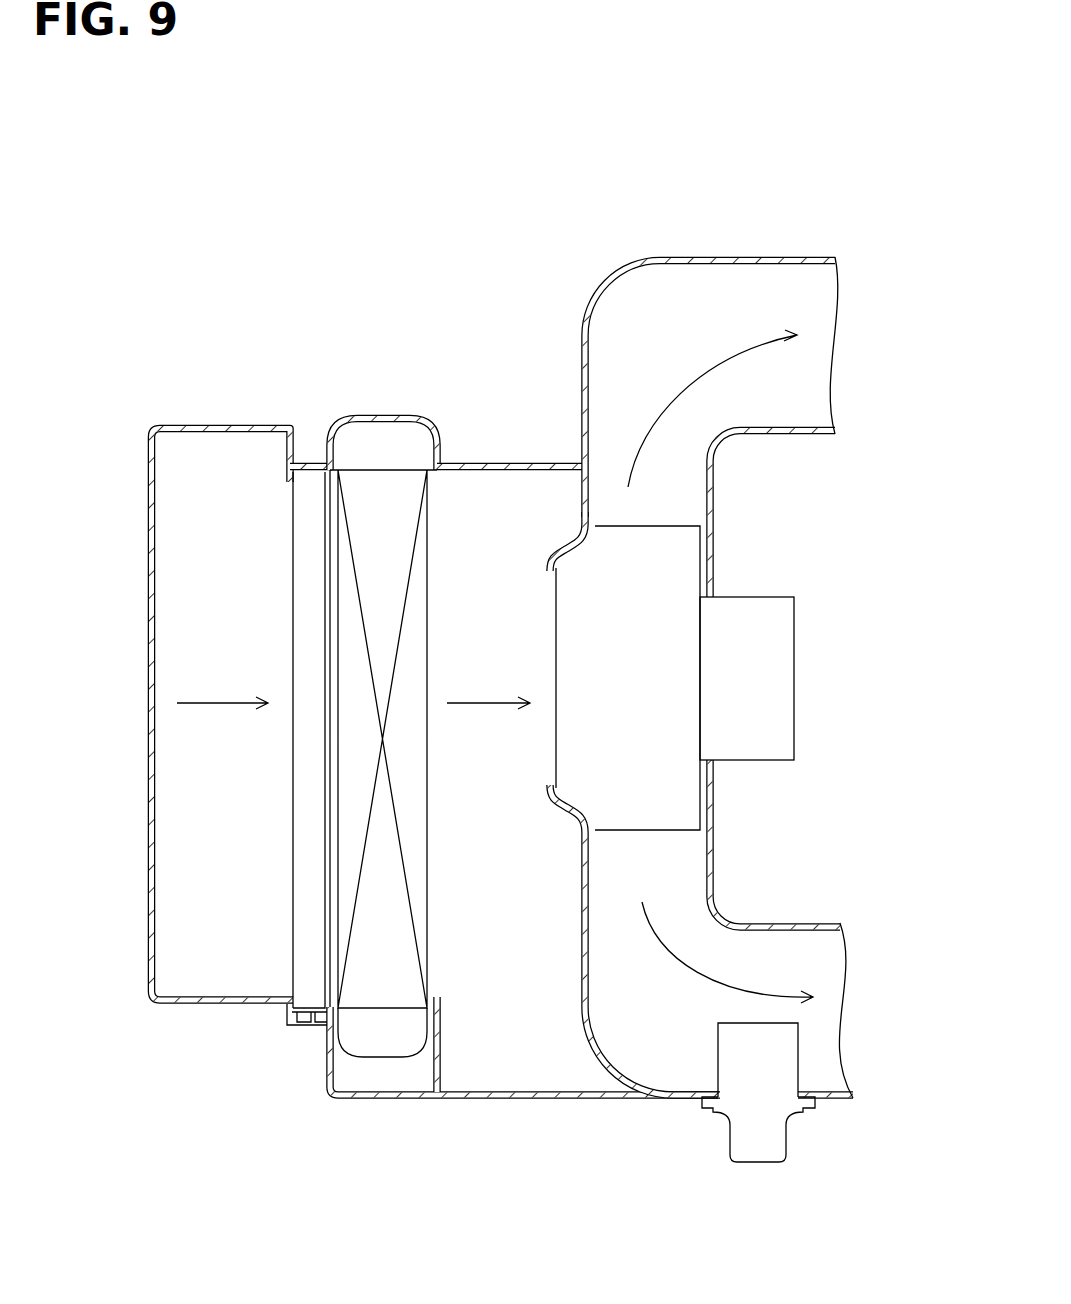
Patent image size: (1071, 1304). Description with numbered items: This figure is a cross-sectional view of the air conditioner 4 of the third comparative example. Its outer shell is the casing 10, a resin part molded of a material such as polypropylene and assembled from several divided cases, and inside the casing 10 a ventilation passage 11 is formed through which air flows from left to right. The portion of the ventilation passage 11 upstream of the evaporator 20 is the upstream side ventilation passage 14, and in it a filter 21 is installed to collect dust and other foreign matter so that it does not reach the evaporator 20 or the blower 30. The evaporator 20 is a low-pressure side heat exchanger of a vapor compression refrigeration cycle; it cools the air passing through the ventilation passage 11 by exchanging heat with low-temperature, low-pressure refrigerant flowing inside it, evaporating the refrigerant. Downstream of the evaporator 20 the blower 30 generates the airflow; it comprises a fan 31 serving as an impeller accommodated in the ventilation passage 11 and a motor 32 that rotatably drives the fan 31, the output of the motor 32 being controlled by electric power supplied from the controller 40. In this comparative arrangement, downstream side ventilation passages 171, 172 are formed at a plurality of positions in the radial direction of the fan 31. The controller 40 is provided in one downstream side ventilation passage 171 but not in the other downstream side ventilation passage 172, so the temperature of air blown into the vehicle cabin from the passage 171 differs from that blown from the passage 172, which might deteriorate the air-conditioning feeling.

The air conditioner 4 is at (495, 248).
The casing 10 is at (148, 580).
The ventilation passage 11 is at (697, 312).
The upstream side ventilation passage 14 is at (200, 777).
The evaporator 20 is at (378, 522).
The filter 21 is at (312, 530).
The blower 30 is at (898, 523).
The fan 31 is at (647, 555).
The motor 32 is at (747, 625).
The controller 40 is at (760, 1140).
The downstream side ventilation passage 171 is at (803, 962).
The downstream side ventilation passage 172 is at (711, 393).